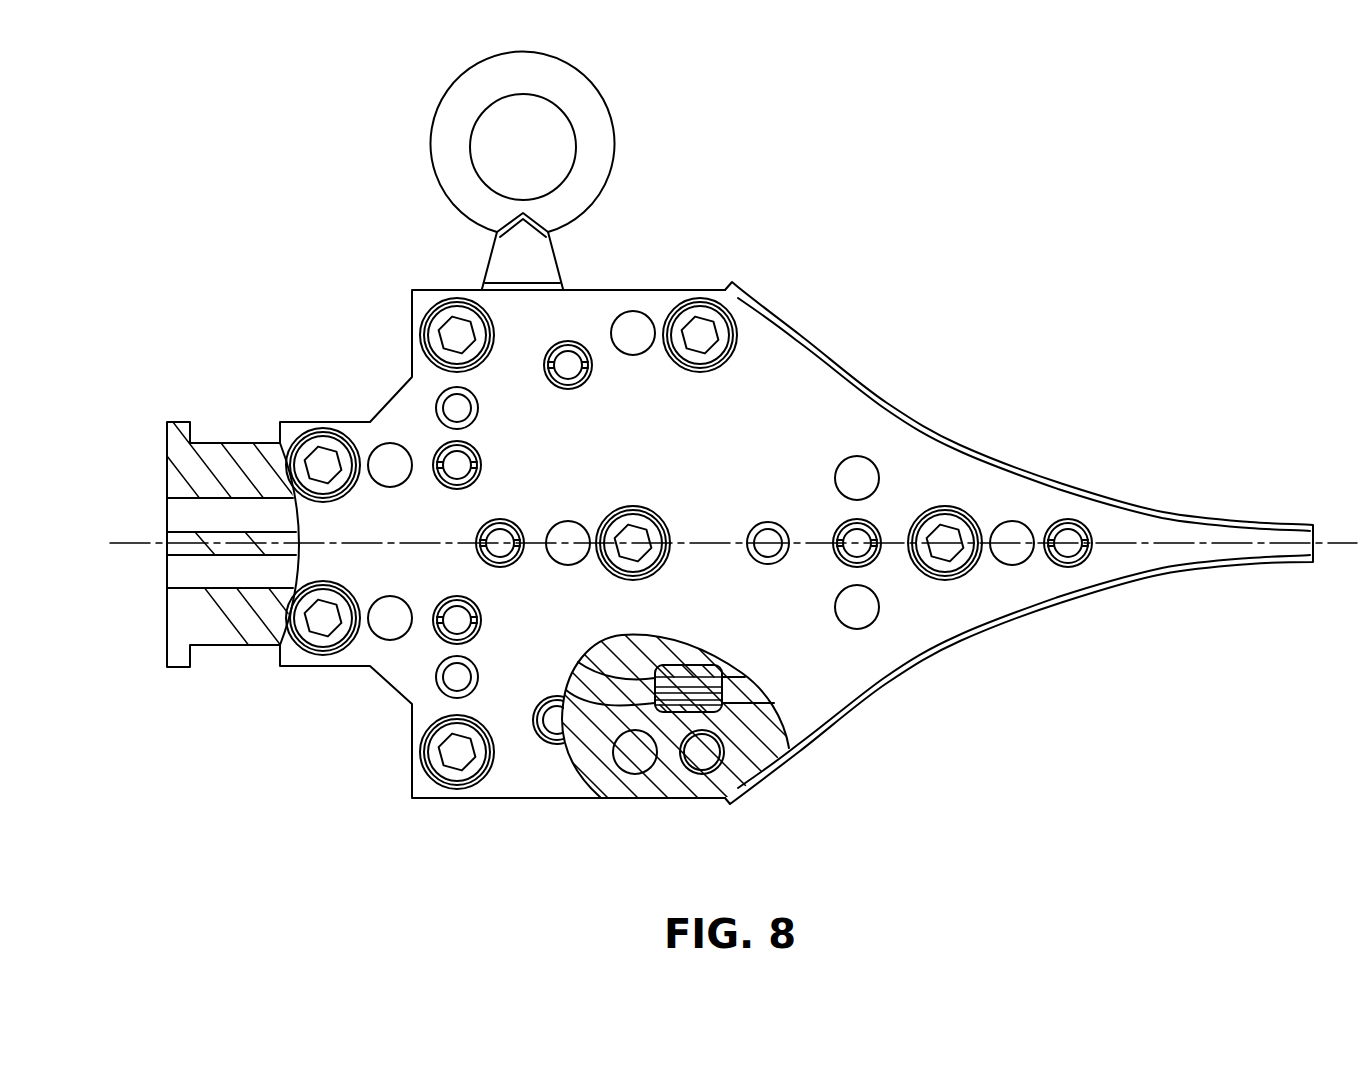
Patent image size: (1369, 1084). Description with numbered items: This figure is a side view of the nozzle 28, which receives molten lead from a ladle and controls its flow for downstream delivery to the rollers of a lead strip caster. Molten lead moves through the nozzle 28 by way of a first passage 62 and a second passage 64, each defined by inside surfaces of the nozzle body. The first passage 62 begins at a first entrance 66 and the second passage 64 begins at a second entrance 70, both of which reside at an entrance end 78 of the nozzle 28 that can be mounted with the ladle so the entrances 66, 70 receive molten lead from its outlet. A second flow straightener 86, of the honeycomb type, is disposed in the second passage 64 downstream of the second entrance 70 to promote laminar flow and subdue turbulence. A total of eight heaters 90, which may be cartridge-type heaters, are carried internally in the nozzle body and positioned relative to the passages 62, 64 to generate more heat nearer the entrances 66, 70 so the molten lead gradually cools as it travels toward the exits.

The nozzle 28 is at (336, 276).
The entrance end 78 is at (165, 455).
The first entrance 66 is at (167, 496).
The first passage 62 is at (220, 513).
The second passage 64 is at (220, 571).
The second entrance 70 is at (167, 595).
The second flow straightener 86 is at (687, 692).
The heaters 90 is at (633, 333).